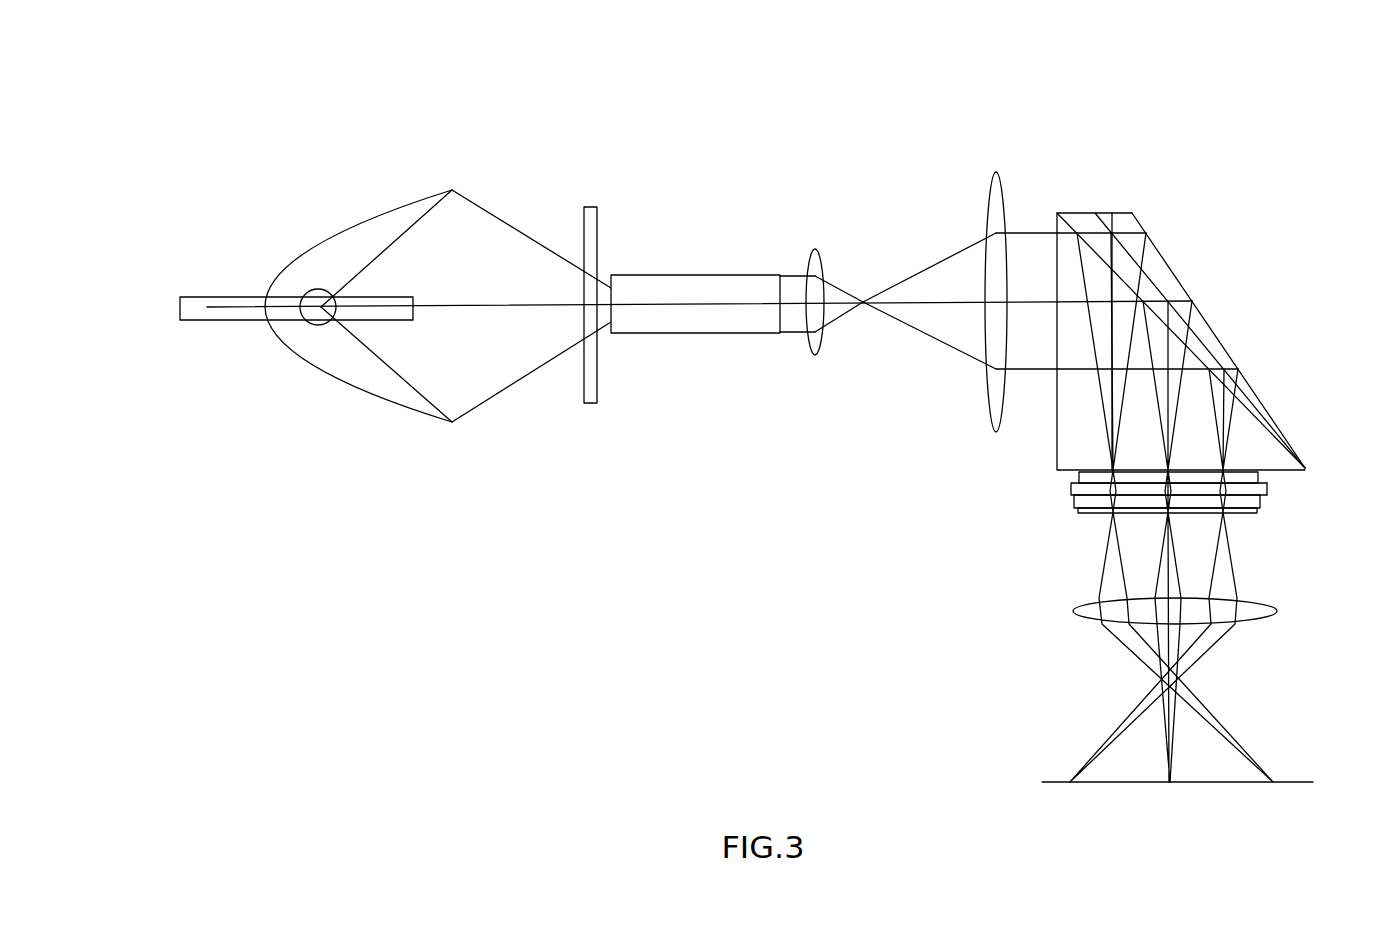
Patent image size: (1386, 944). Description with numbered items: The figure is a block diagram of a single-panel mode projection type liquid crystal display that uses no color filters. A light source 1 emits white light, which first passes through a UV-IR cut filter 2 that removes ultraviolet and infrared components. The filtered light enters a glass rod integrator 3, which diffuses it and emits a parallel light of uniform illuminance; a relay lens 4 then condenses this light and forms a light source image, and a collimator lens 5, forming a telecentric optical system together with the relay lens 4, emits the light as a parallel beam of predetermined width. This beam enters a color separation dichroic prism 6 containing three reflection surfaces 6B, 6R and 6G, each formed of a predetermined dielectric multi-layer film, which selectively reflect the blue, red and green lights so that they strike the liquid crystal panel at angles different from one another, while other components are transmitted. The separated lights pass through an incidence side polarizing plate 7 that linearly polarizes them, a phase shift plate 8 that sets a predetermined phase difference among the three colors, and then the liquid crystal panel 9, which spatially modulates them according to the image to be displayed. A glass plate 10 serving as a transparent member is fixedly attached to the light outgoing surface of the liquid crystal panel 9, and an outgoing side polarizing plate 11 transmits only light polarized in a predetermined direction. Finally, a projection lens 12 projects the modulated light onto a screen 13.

The light source 1 is at (372, 206).
The UV-IR cut filter 2 is at (593, 207).
The glass rod integrator 3 is at (693, 274).
The relay lens 4 is at (815, 249).
The collimator lens 5 is at (993, 175).
The color separation dichroic prism 6 is at (1184, 239).
The reflection surface 6B is at (1070, 215).
The reflection surface 6R is at (1128, 227).
The reflection surface 6G is at (1180, 277).
The incidence side polarizing plate 7 is at (1258, 473).
The phase shift plate 8 is at (1267, 485).
The liquid crystal panel 9 is at (1072, 487).
The glass plate 10 is at (1074, 498).
The outgoing side polarizing plate 11 is at (1078, 510).
The projection lens 12 is at (1073, 611).
The screen 13 is at (1052, 782).